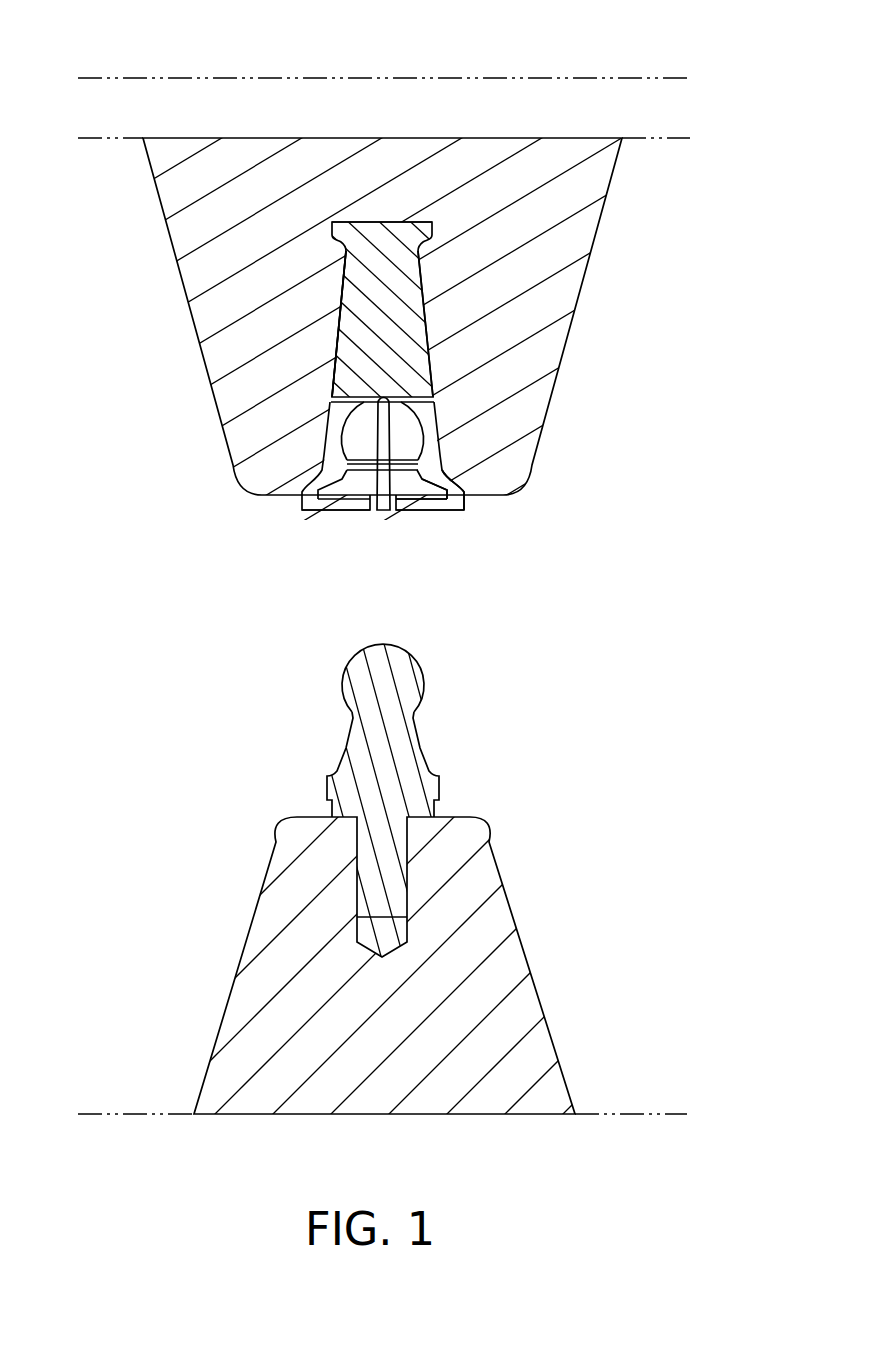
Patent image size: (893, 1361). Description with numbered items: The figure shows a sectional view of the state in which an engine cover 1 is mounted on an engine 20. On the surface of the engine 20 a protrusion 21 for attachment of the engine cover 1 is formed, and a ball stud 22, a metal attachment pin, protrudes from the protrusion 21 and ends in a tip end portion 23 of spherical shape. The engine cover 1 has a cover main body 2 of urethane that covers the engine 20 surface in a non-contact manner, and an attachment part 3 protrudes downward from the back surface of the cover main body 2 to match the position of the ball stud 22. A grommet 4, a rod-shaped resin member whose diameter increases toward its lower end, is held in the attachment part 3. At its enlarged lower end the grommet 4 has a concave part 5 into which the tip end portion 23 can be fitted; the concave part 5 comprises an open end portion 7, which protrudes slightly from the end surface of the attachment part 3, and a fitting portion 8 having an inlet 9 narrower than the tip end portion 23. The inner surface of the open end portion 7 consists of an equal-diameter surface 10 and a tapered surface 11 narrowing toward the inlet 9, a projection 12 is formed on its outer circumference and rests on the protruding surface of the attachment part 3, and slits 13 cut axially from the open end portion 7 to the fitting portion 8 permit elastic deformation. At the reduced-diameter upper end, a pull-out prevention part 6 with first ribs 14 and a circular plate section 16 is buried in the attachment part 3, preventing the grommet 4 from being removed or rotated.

The engine cover 1 is at (567, 75).
The cover main body 2 is at (665, 95).
The attachment part 3 is at (582, 237).
The grommet 4 is at (442, 316).
The concave part 5 is at (447, 453).
The pull-out prevention part 6 is at (335, 292).
The open end portion 7 is at (417, 511).
The fitting portion 8 is at (352, 425).
The inlet 9 is at (362, 472).
The equal-diameter surface 10 is at (400, 507).
The tapered surface 11 is at (430, 500).
The projection 12 is at (475, 497).
The slit 13 is at (307, 503).
The first rib 14 is at (337, 322).
The circular plate section 16 is at (341, 230).
The engine 20 is at (632, 1130).
The protrusion 21 is at (515, 960).
The ball stud 22 is at (413, 790).
The tip end portion 23 is at (405, 665).